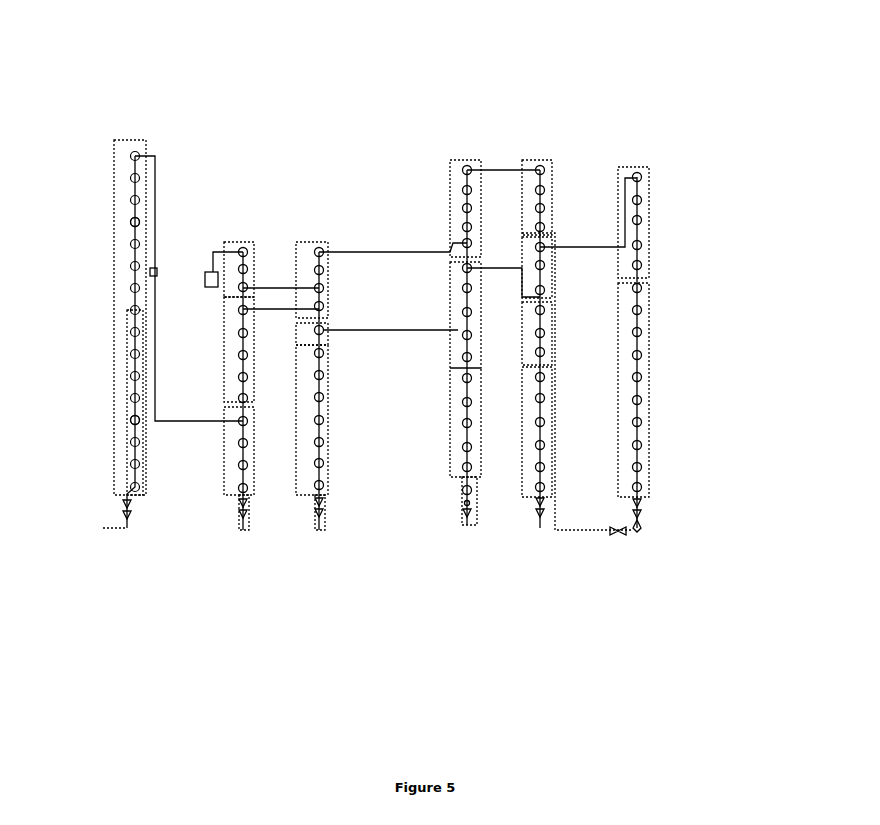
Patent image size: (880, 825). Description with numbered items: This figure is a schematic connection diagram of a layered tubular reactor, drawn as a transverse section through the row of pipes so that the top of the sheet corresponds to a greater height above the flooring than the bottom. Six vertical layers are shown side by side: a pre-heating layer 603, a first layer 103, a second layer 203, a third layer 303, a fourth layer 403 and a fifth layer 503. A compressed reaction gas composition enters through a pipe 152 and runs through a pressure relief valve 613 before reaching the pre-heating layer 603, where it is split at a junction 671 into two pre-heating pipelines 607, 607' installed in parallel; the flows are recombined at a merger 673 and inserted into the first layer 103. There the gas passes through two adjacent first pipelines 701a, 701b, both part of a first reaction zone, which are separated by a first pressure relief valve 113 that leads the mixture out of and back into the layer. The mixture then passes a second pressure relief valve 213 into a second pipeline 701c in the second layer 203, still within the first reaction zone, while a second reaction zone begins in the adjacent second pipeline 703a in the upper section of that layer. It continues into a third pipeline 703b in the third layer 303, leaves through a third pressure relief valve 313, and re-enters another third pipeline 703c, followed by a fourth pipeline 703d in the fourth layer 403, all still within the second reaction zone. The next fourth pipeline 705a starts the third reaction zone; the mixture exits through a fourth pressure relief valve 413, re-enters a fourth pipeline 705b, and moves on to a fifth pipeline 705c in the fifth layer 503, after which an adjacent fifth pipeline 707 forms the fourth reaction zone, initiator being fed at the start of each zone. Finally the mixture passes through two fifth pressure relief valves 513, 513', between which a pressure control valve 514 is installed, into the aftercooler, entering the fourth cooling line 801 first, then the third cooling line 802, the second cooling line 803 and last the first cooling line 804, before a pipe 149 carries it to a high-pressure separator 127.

The pre-heating layer 603 is at (122, 128).
The first layer 103 is at (238, 128).
The second layer 203 is at (317, 128).
The third layer 303 is at (460, 128).
The fourth layer 403 is at (540, 128).
The fifth layer 503 is at (632, 128).
The merger 673 is at (154, 265).
The pre-heating pipeline 607' is at (94, 217).
The pre-heating pipeline 607 is at (84, 398).
The junction 671 is at (127, 486).
The pressure relief valve 613 is at (124, 515).
The pipe 152 is at (122, 528).
The high-pressure separator 127 is at (210, 268).
The pipe 149 is at (210, 260).
The first cooling line 804 is at (236, 247).
The second cooling line 803 is at (312, 247).
The third cooling line 802 is at (456, 186).
The fourth cooling line 801 is at (550, 178).
The first pipeline 701a is at (232, 457).
The first pipeline 701b is at (228, 335).
The second pipeline 701c is at (298, 445).
The second pipeline 703a is at (326, 330).
The third pipeline 703b is at (462, 423).
The third pipeline 703c is at (458, 327).
The fourth pipeline 703d is at (530, 338).
The fourth pipeline 705a is at (548, 423).
The fourth pipeline 705b is at (552, 280).
The fifth pipeline 705c is at (650, 233).
The fifth pipeline 707 is at (650, 377).
The first pressure relief valve 113 is at (240, 512).
The second pressure relief valve 213 is at (332, 510).
The third pressure relief valve 313 is at (478, 516).
The fourth pressure relief valve 413 is at (540, 522).
The fifth pressure relief valve 513 is at (687, 529).
The fifth pressure relief valve 513' is at (657, 549).
The pressure control valve 514 is at (640, 525).